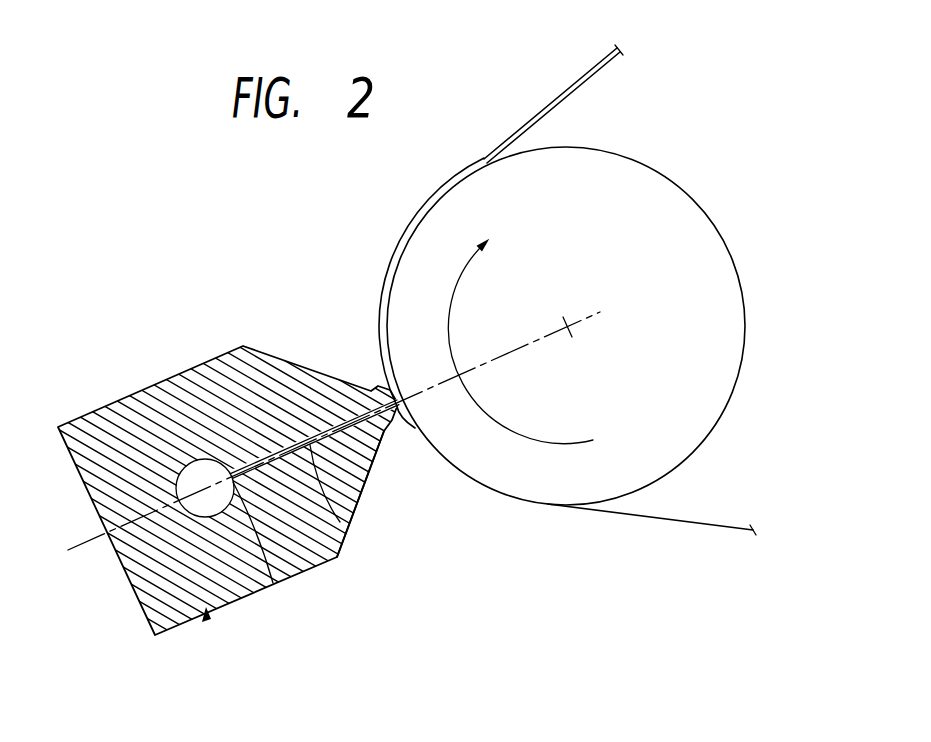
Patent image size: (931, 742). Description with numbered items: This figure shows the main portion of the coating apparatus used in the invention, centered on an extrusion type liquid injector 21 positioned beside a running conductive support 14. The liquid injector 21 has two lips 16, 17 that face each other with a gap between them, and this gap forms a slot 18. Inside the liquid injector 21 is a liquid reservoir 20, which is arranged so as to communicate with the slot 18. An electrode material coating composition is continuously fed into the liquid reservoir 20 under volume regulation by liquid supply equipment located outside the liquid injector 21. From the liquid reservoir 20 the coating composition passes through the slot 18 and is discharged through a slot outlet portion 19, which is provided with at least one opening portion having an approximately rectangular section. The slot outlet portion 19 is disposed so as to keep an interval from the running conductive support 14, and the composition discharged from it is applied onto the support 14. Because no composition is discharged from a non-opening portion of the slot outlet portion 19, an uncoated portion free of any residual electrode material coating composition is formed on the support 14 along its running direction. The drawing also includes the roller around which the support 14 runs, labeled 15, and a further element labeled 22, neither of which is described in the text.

The conductive support 14 is at (647, 518).
The roller 15 is at (697, 384).
The lip 16 is at (377, 455).
The lip 17 is at (320, 395).
The slot 18 is at (338, 525).
The slot outlet portion 19 is at (407, 403).
The liquid reservoir 20 is at (178, 455).
The extrusion type liquid injector 21 is at (208, 617).
The insert 22 is at (273, 583).